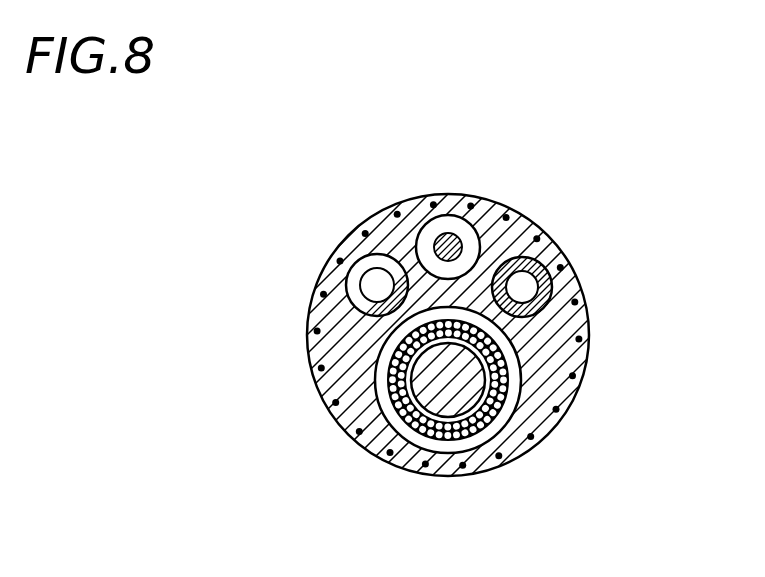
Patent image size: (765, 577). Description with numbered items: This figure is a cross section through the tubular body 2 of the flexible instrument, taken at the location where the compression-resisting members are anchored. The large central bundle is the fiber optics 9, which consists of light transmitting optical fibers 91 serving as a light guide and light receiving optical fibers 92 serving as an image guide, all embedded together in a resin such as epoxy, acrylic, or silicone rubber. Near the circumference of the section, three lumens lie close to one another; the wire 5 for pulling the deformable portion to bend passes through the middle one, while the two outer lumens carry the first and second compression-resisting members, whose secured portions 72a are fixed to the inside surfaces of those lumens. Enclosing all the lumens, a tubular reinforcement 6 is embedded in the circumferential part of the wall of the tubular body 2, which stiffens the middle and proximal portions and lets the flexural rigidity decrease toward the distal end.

The tubular body 2 is at (308, 310).
The wire 5 is at (457, 240).
The tubular reinforcement 6 is at (583, 312).
The fiber optics 9 is at (375, 385).
The secured portions of the first and second compression-resisting members 72a is at (378, 257).
The light transmitting optical fibers 91 is at (432, 433).
The light receiving optical fibers 92 is at (473, 383).